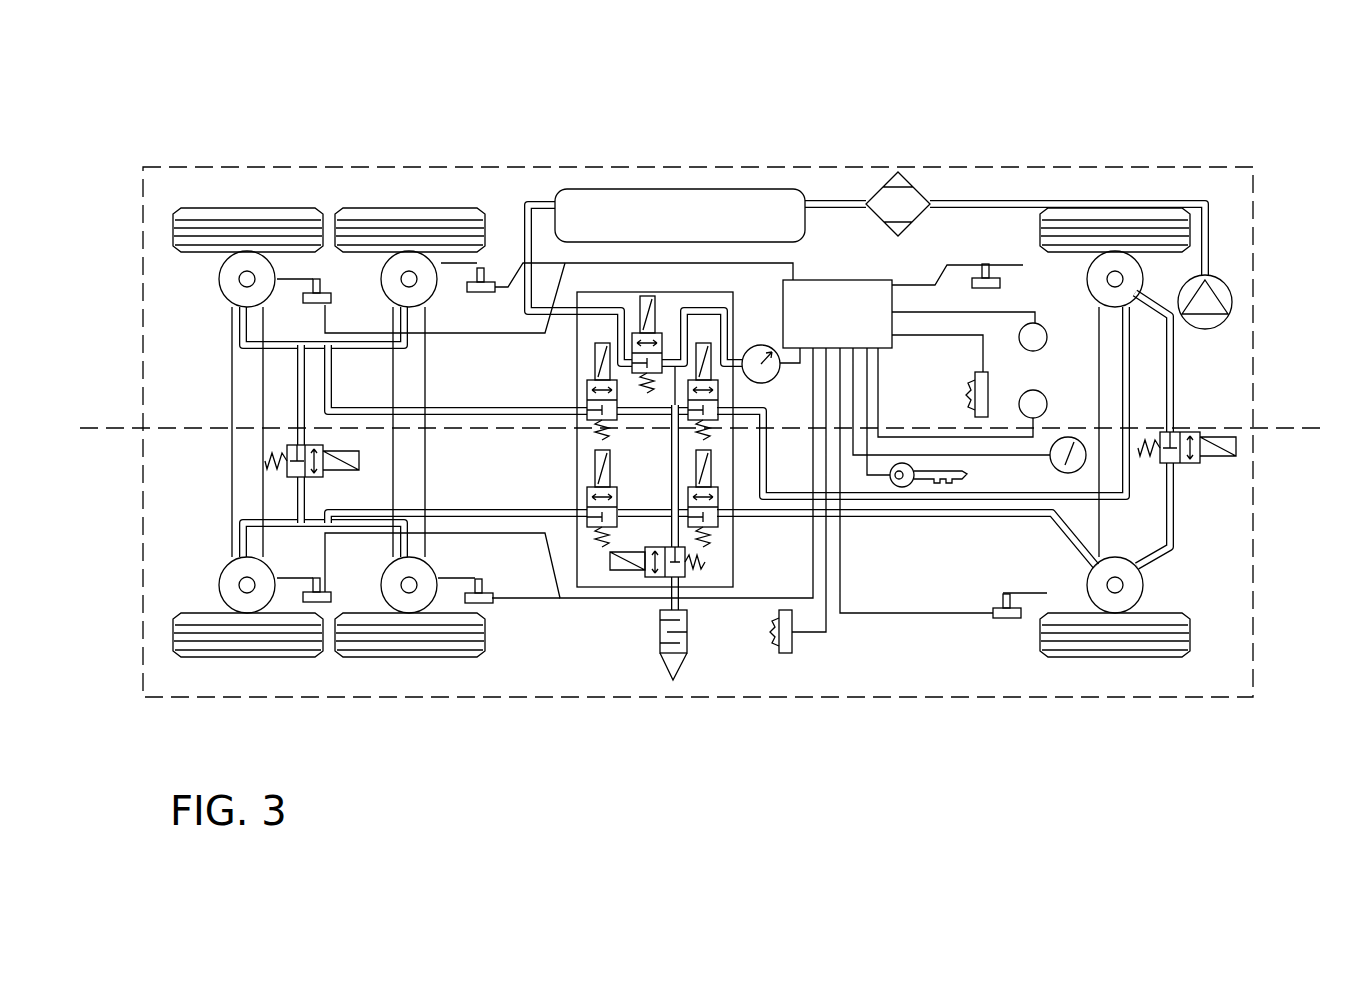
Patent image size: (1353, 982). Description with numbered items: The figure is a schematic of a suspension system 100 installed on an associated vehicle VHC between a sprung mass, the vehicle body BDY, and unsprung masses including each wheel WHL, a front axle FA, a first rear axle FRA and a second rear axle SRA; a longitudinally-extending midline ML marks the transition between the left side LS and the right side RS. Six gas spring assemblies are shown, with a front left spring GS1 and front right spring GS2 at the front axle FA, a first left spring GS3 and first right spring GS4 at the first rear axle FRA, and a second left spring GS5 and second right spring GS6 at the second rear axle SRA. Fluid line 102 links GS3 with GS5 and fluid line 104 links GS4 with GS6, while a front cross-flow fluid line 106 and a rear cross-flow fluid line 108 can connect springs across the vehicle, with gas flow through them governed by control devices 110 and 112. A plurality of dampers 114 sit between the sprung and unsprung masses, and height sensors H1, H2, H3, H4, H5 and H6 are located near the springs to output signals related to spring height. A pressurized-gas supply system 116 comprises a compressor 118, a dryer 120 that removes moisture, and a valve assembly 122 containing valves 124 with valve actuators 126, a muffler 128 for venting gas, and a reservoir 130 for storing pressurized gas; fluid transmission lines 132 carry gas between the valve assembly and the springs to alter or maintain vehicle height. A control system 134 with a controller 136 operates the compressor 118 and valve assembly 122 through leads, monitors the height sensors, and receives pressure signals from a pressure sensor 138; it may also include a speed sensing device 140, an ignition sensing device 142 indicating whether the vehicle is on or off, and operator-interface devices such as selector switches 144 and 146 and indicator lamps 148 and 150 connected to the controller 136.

The suspension system 100 is at (855, 625).
The fluid line 102 is at (280, 347).
The fluid line 104 is at (280, 517).
The front cross-flow fluid line 106 is at (1175, 368).
The rear cross-flow fluid line 108 is at (298, 382).
The control device 110 is at (1205, 465).
The control device 112 is at (287, 449).
The damper 114 is at (250, 276).
The pressurized-gas supply system 116 is at (830, 200).
The compressor 118 is at (1232, 300).
The dryer 120 is at (916, 189).
The valve assembly 122 is at (597, 288).
The valve 124 is at (688, 500).
The valve actuator 126 is at (595, 465).
The muffler 128 is at (660, 645).
The reservoir 130 is at (692, 189).
The fluid transmission line 132 is at (462, 395).
The control system 134 is at (902, 538).
The controller 136 is at (855, 326).
The pressure sensor 138 is at (775, 375).
The speed sensing device 140 is at (1072, 437).
The ignition sensing device 142 is at (967, 476).
The selector switch 144 is at (776, 645).
The selector switch 146 is at (970, 392).
The indicator lamp 148 is at (1040, 392).
The indicator lamp 150 is at (1045, 330).
The wheel WHL is at (178, 212).
The front left spring GS1 is at (1115, 279).
The front right spring GS2 is at (1115, 585).
The first left spring GS3 is at (409, 279).
The first right spring GS4 is at (409, 585).
The second left spring GS5 is at (247, 279).
The second right spring GS6 is at (247, 585).
The height sensor H1 is at (985, 278).
The height sensor H2 is at (1008, 620).
The height sensor H3 is at (480, 293).
The height sensor H4 is at (492, 603).
The height sensor H5 is at (332, 300).
The height sensor H6 is at (332, 597).
The first rear axle FRA is at (425, 460).
The second rear axle SRA is at (232, 518).
The front axle FA is at (1125, 527).
The midline ML is at (1263, 425).
The left side LS is at (780, 106).
The right side RS is at (825, 784).
The vehicle body BDY is at (1205, 167).
The vehicle VHC is at (1102, 98).